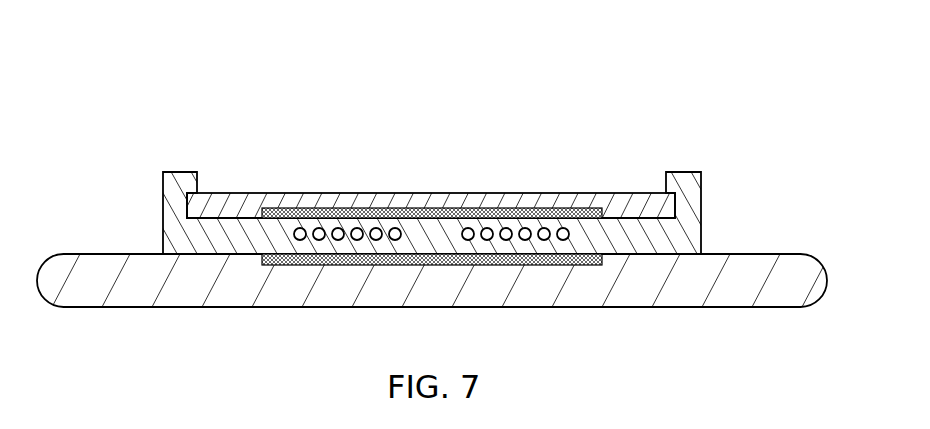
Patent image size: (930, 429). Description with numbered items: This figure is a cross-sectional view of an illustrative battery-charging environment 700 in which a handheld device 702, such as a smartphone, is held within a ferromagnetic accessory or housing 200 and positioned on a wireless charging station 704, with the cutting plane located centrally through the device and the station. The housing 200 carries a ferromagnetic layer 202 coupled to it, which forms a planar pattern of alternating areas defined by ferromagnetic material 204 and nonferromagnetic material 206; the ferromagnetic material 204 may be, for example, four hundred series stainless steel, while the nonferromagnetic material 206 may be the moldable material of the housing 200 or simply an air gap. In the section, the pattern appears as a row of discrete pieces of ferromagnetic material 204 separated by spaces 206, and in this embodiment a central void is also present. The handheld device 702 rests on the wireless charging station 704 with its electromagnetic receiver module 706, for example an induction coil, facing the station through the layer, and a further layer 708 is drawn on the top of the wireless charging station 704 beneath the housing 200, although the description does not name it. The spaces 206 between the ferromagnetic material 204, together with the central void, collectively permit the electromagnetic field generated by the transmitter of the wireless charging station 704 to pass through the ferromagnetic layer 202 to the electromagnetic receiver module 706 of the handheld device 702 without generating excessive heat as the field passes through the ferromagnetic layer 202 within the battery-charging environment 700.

The battery-charging environment 700 is at (202, 70).
The housing 200 is at (414, 194).
The ferromagnetic layer 202 is at (323, 191).
The ferromagnetic material 204 is at (263, 234).
The nonferromagnetic material 206 is at (411, 243).
The handheld device 702 is at (572, 198).
The wireless charging station 704 is at (757, 253).
The electromagnetic receiver module 706 is at (516, 214).
The lower thermal interface layer 708 is at (584, 266).